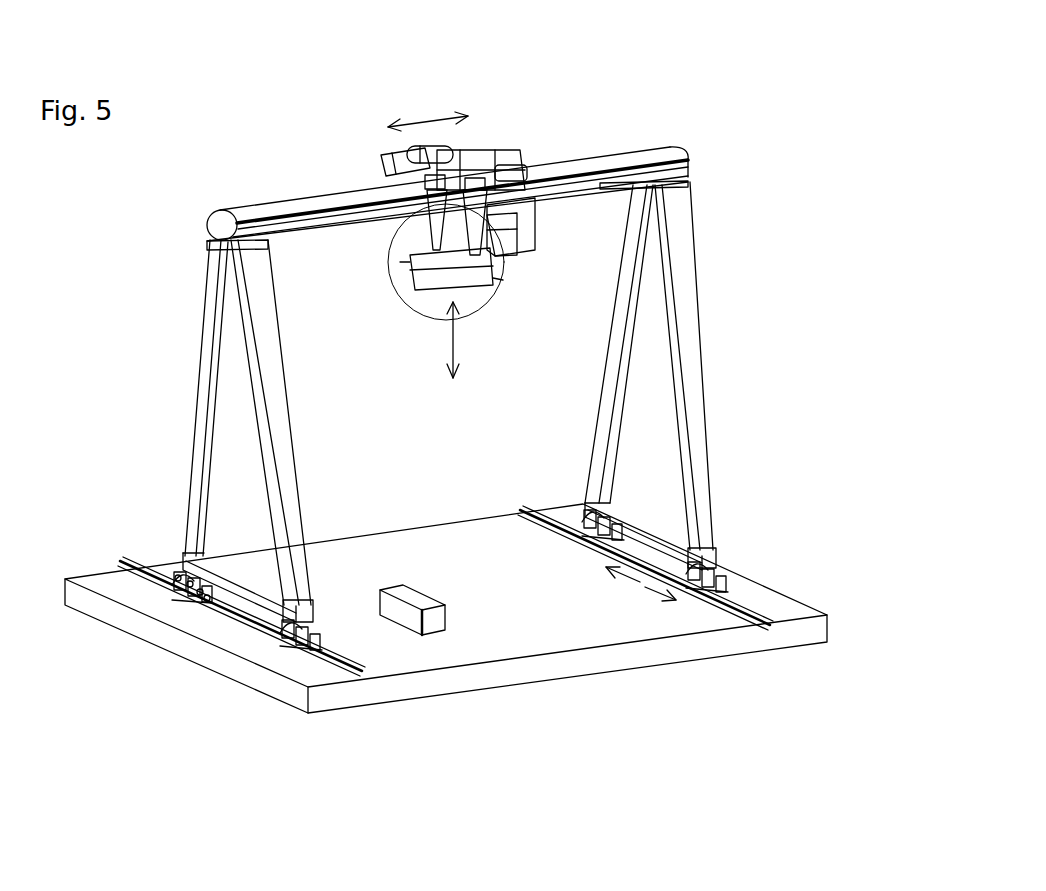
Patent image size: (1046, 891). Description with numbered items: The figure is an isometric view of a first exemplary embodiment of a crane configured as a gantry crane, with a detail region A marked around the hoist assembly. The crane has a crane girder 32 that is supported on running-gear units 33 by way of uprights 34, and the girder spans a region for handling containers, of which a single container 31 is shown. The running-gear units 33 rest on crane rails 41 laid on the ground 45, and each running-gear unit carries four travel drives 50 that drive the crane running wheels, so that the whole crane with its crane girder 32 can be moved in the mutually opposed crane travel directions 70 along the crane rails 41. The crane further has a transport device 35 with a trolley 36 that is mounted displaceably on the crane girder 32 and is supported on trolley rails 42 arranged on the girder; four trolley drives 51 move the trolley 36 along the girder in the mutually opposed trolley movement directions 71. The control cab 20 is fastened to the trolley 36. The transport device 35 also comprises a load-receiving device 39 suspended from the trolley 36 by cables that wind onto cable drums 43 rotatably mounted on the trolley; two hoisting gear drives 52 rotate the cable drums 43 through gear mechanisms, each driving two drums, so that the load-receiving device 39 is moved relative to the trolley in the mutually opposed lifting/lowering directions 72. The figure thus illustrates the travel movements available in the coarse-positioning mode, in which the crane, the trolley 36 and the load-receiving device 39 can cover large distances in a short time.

The control cab 20 is at (531, 222).
The container 31 is at (432, 618).
The crane girder 32 is at (673, 157).
The running-gear units 33 is at (197, 606).
The uprights 34 is at (272, 436).
The transport device 35 is at (487, 120).
The trolley 36 is at (410, 150).
The load-receiving device 39 is at (487, 280).
The crane rails 41 is at (346, 660).
The trolley rails 42 is at (533, 207).
The cable drums 43 is at (407, 163).
The ground 45 is at (703, 652).
The travel drives 50 is at (200, 599).
The trolley drives 51 is at (433, 192).
The hoisting gear drives 52 is at (493, 152).
The crane travel directions 70 is at (637, 582).
The trolley movement directions 71 is at (430, 112).
The lifting/lowering directions 72 is at (446, 333).
The detail region A is at (393, 288).